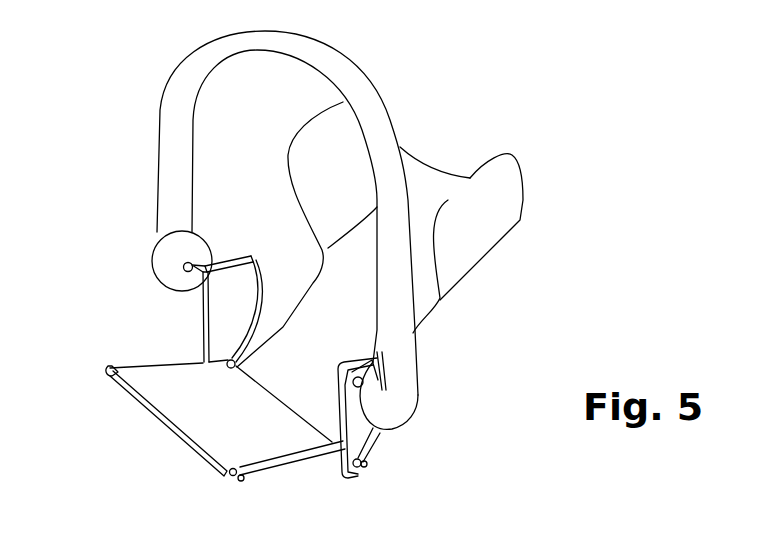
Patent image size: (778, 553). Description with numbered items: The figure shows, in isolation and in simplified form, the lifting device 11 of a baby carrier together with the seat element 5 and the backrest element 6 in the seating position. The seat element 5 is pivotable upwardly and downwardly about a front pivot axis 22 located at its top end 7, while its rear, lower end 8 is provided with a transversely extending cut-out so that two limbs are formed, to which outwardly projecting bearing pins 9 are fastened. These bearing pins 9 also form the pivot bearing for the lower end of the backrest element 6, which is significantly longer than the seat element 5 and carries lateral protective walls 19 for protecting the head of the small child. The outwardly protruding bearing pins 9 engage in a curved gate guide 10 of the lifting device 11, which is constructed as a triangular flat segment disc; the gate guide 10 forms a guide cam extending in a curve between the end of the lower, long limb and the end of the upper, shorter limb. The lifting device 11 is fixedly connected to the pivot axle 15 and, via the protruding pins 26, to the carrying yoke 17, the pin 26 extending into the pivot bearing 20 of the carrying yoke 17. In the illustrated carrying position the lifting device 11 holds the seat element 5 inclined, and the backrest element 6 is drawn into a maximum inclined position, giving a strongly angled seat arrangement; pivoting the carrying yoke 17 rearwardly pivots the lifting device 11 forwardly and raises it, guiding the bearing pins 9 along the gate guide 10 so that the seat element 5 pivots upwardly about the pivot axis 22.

The seat element 5 is at (205, 400).
The backrest element 6 is at (437, 183).
The end (seat element, top) 7 is at (148, 413).
The end (seat element, bottom) 8 is at (290, 412).
The bearing pin 9 is at (366, 467).
The gate guide 10 is at (258, 262).
The lifting device 11 is at (228, 295).
The pivot axle 15 is at (198, 275).
The carrying yoke 17 is at (283, 50).
The lateral protective wall 19 is at (340, 153).
The pivot bearing 20 is at (170, 265).
The pivot axis 22 is at (108, 372).
The pin 26 is at (186, 265).